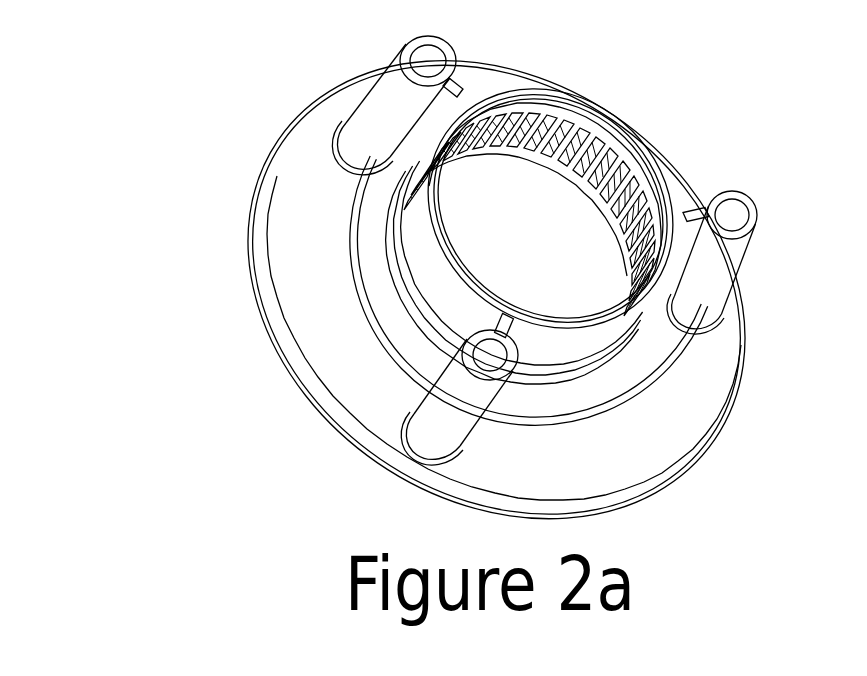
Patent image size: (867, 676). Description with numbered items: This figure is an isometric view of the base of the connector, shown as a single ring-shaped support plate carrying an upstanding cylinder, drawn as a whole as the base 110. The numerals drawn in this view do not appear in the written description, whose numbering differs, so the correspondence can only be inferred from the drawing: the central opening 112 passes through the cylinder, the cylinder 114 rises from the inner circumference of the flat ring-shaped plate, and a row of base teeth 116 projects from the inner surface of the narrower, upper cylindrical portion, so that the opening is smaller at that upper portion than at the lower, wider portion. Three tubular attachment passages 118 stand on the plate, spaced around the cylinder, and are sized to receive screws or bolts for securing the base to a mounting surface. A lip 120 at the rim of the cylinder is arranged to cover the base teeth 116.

The bearing assembly 110 is at (434, 306).
The bore opening 112 is at (580, 293).
The hub ring 114 is at (607, 160).
The internal gear teeth 116 is at (590, 121).
The mounting boss 118 is at (500, 360).
The inner ring surface 120 is at (605, 212).